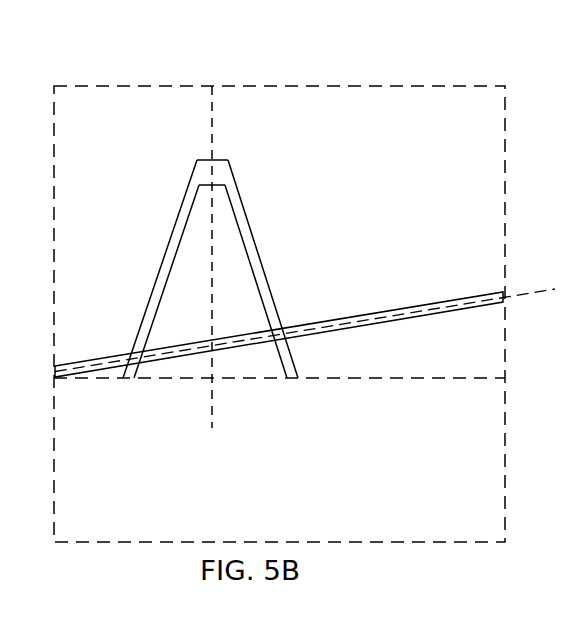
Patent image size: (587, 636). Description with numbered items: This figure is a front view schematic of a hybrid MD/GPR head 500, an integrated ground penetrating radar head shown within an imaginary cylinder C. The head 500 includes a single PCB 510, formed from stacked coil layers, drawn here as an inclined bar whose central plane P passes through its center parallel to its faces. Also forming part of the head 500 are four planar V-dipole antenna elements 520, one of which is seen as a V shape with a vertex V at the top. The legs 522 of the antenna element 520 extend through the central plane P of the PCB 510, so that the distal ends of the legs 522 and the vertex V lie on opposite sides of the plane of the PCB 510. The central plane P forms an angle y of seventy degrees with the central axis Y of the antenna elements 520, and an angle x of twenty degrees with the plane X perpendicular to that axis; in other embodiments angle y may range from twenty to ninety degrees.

The hybrid MD/GPR head 500 is at (522, 92).
The PCB 510 is at (491, 296).
The planar V-dipole antenna element 520 is at (223, 173).
The legs 522 is at (168, 263).